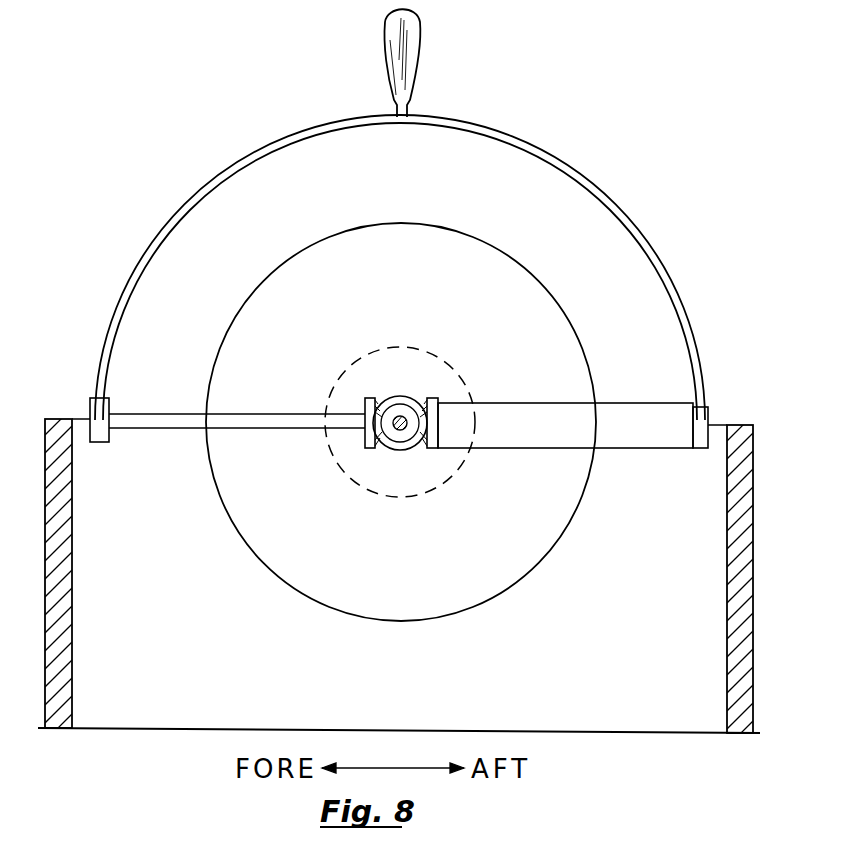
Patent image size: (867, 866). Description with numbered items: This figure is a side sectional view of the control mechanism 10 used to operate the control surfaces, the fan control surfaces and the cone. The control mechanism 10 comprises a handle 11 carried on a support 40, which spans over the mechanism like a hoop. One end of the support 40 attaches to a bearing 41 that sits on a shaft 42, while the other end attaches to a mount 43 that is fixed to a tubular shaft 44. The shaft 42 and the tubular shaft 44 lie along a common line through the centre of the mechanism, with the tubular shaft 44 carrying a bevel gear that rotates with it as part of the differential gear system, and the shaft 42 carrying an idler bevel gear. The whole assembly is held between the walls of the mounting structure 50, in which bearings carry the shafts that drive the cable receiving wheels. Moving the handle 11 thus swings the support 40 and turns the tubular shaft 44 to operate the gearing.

The control mechanism 10 is at (621, 169).
The handle 11 is at (406, 34).
The support 40 is at (516, 126).
The bearing 41 is at (92, 416).
The shaft 42 is at (284, 422).
The mount 43 is at (710, 412).
The tubular shaft 44 is at (650, 428).
The mounting structure 50 is at (727, 521).